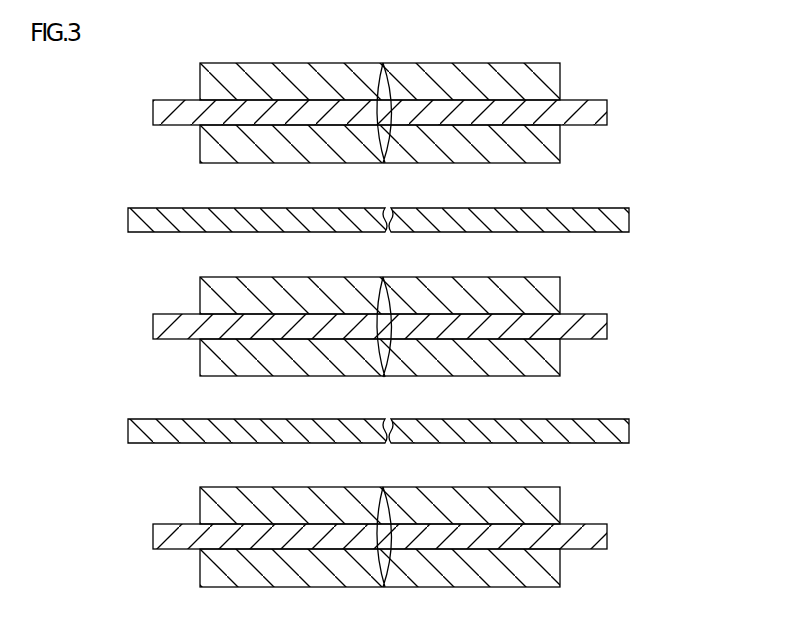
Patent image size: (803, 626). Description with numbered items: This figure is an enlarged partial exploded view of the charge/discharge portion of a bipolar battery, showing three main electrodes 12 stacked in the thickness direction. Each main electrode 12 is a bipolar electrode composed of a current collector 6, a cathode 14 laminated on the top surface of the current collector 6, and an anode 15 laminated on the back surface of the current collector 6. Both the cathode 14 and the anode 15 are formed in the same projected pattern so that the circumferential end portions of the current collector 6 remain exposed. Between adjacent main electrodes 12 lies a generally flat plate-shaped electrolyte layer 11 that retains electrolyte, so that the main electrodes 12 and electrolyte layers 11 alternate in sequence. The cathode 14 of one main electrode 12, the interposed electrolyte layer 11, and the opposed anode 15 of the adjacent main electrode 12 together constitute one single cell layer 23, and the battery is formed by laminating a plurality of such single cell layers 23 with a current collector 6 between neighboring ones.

The main electrode 12 is at (420, 319).
The cathode 14 is at (560, 72).
The current collector 6 is at (607, 112).
The anode 15 is at (367, 359).
The electrolyte layer 11 is at (383, 327).
The single cell layer 23 is at (358, 328).